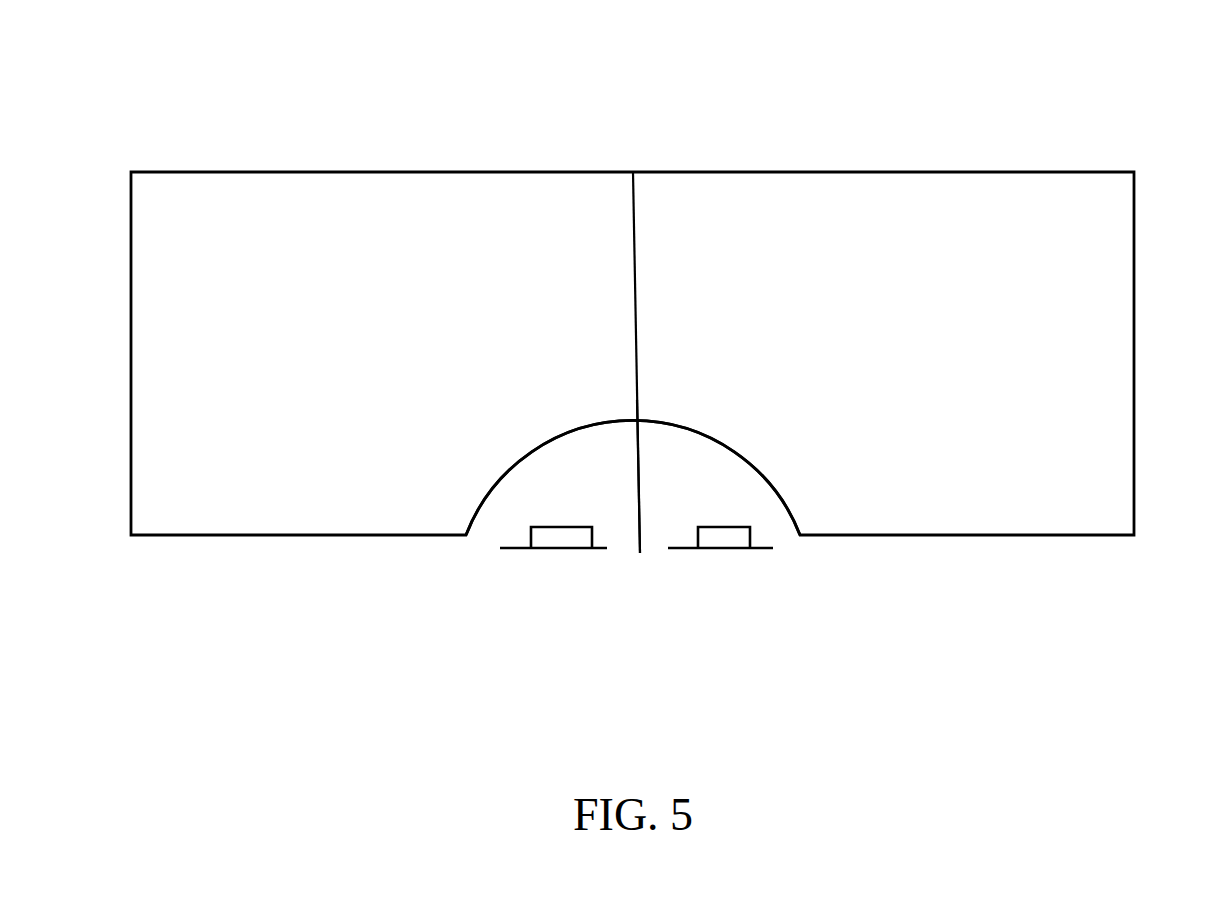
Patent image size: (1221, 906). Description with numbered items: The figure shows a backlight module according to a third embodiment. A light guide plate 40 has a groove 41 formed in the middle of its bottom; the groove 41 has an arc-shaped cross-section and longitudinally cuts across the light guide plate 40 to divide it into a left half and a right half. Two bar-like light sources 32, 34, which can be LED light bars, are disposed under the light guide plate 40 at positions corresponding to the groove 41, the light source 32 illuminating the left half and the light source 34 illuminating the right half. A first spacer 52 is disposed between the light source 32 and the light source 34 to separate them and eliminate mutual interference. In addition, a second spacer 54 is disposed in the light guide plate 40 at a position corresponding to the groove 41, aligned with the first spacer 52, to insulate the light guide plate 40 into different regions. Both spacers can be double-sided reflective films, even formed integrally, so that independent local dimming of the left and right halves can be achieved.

The light guide plate 40 is at (1135, 252).
The groove 41 is at (785, 505).
The second spacer 54 is at (635, 250).
The first spacer 52 is at (638, 540).
The light source 32 is at (557, 548).
The light source 34 is at (724, 548).